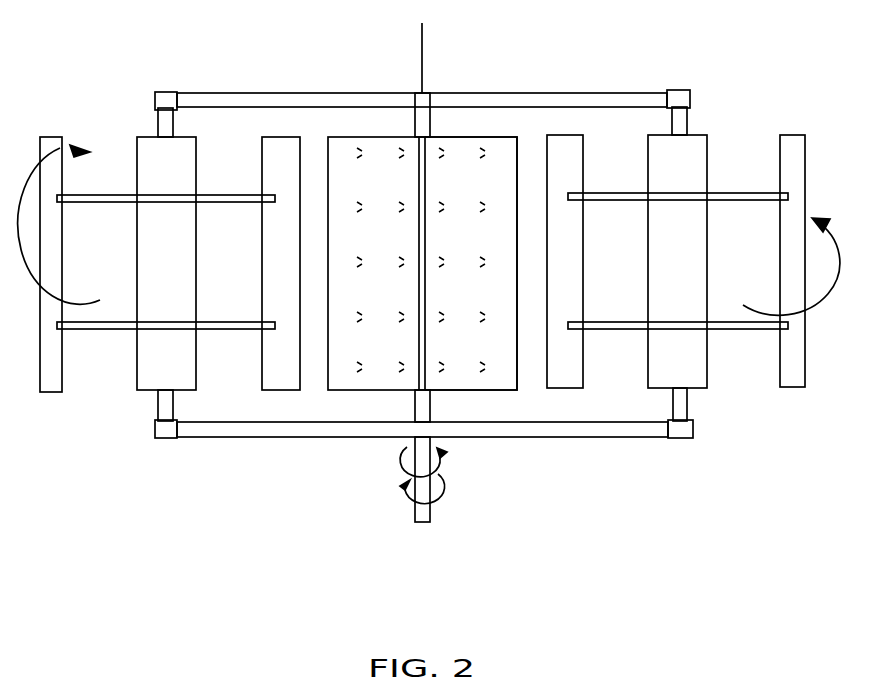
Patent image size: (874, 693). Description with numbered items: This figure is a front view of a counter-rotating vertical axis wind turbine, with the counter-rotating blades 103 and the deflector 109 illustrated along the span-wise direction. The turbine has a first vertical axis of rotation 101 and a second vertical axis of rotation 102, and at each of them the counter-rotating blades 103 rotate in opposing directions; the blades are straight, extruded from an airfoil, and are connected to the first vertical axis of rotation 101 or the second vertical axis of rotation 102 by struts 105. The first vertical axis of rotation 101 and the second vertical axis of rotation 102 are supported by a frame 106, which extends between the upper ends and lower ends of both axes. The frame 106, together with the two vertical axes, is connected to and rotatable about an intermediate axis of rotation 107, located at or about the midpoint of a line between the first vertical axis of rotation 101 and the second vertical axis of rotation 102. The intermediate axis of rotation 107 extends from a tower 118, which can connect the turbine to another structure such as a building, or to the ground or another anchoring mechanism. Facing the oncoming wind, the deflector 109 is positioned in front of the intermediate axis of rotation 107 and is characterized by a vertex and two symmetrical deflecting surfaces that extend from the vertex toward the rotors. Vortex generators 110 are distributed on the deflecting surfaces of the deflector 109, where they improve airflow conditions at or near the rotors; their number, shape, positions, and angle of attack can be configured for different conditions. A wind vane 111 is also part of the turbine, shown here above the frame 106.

The first vertical axis of rotation 101 is at (687, 120).
The second vertical axis of rotation 102 is at (158, 120).
The counter-rotating blades 103 is at (138, 283).
The struts 105 is at (77, 330).
The frame 106 is at (290, 92).
The intermediate axis of rotation 107 is at (417, 395).
The deflector 109 is at (468, 133).
The vortex generators 110 is at (480, 377).
The wind vane 111 is at (423, 42).
The tower 118 is at (433, 512).